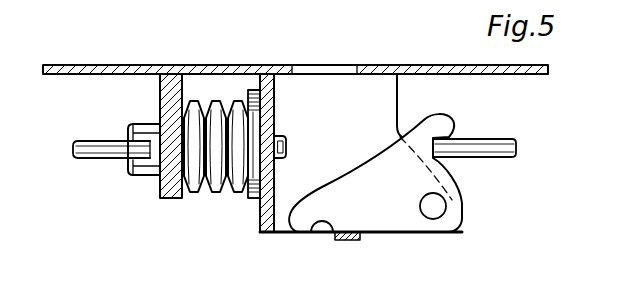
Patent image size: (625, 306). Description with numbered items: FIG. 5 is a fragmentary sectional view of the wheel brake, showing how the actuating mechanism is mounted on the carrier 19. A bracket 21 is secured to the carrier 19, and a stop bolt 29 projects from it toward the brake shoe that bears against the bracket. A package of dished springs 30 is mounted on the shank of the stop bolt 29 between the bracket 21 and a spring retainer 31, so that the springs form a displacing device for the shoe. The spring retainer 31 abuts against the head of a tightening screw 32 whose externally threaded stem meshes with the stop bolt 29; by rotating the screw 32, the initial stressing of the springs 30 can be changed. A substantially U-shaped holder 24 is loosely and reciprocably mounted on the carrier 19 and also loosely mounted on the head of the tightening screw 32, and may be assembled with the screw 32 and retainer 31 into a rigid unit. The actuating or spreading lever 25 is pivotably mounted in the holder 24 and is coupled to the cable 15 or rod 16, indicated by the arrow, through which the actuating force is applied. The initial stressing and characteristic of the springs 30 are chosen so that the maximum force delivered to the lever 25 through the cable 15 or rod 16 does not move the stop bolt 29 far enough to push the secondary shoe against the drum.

The carrier 19 is at (110, 70).
The bracket 21 is at (172, 199).
The stop bolt 29 is at (142, 176).
The dished springs 30 is at (201, 193).
The spring retainer 31 is at (255, 200).
The U-shaped holder 24 is at (267, 233).
The tightening screw 32 is at (277, 140).
The actuating lever 25 is at (388, 214).
The cable 15 is at (339, 176).
The rod 16 is at (322, 231).